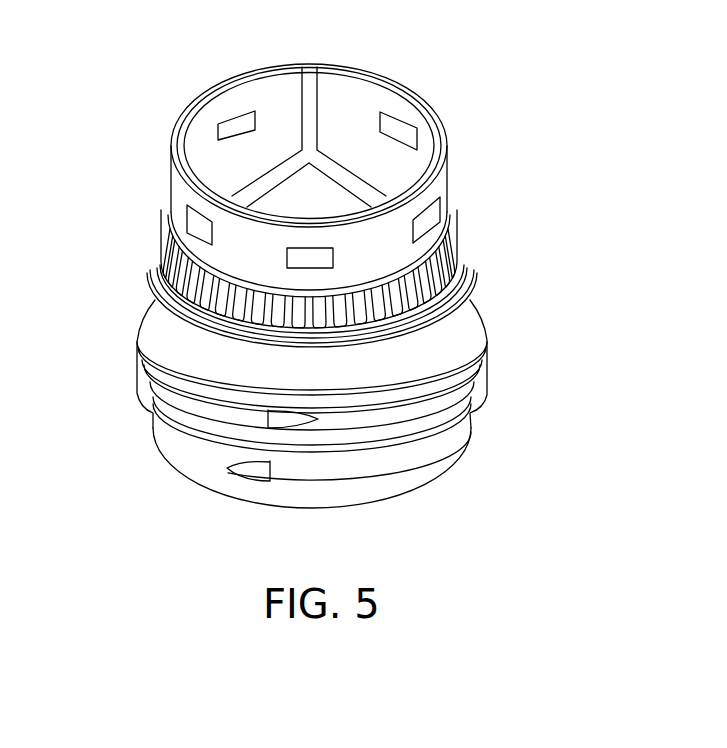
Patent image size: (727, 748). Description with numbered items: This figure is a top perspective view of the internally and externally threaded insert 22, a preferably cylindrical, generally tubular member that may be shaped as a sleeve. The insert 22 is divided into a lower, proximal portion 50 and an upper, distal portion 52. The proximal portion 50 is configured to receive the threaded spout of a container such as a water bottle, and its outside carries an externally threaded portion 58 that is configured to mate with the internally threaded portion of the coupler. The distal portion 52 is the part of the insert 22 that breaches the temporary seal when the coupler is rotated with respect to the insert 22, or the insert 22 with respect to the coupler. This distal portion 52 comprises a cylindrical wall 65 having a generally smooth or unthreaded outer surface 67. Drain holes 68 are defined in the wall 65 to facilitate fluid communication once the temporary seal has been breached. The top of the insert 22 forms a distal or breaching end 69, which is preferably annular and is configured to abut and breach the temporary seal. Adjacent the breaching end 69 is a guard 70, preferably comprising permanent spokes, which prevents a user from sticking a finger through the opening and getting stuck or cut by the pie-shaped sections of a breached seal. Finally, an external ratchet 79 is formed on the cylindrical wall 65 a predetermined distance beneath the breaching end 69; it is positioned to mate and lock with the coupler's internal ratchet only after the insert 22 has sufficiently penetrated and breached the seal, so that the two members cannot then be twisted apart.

The threaded insert 22 is at (124, 213).
The proximal portion 50 is at (449, 484).
The distal portion 52 is at (489, 106).
The externally threaded portion 58 is at (488, 348).
The cylindrical wall 65 is at (450, 190).
The outer surface 67 is at (459, 233).
The drain holes 68 is at (190, 246).
The breaching end 69 is at (441, 126).
The guard 70 is at (328, 100).
The external ratchet 79 is at (383, 250).